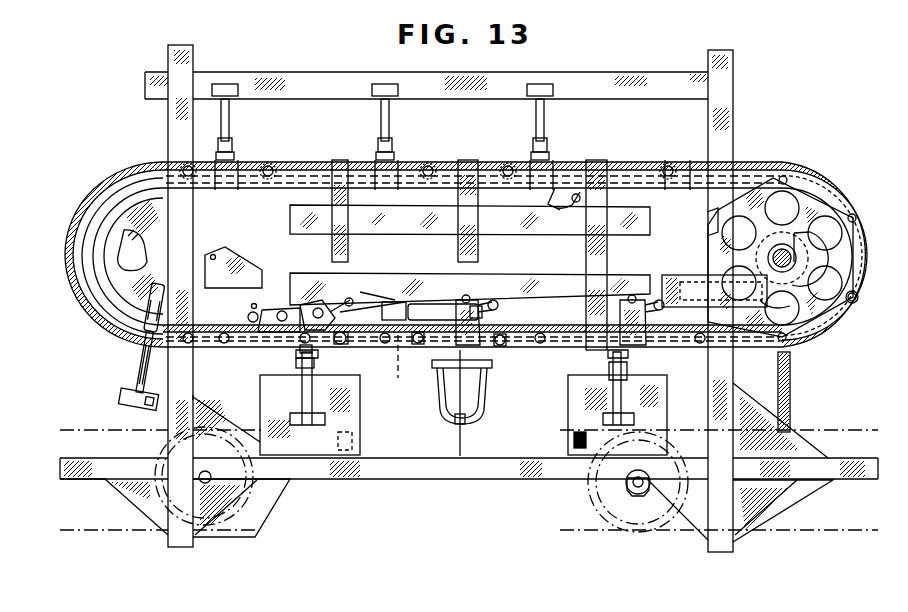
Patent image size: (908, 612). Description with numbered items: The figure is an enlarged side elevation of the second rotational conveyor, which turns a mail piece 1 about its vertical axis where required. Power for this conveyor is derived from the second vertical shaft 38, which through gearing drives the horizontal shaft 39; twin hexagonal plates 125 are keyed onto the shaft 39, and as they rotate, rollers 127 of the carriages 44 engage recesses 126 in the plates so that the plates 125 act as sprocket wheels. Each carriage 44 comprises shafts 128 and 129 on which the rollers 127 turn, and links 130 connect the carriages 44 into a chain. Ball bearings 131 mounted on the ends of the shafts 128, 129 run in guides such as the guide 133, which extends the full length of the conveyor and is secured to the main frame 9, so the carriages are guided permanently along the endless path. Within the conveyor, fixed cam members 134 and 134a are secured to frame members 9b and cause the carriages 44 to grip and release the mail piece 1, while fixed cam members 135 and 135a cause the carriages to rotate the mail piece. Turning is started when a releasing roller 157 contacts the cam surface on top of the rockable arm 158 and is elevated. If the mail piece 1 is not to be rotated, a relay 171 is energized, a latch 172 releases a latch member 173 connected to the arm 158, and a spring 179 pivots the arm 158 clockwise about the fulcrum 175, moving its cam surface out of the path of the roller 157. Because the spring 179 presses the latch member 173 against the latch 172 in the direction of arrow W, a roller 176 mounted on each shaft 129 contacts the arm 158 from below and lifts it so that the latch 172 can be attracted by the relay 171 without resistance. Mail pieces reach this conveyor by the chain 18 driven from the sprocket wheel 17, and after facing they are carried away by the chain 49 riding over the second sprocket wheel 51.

The mail piece 1 is at (362, 418).
The main frame 9 is at (734, 121).
The frame members 9b is at (483, 250).
The sprocket wheel 17 is at (152, 490).
The chain 18 is at (69, 522).
The second vertical shaft 38 is at (791, 396).
The horizontal shaft 39 is at (772, 255).
The carriages 44 is at (490, 364).
The chain 49 is at (822, 530).
The second sprocket wheel 51 is at (616, 505).
The twin hexagonal plates 125 is at (810, 190).
The recesses 126 is at (717, 222).
The rollers 127 is at (856, 304).
The shaft 128 is at (252, 356).
The shaft 129 is at (352, 346).
The links 130 is at (404, 369).
The ball bearings 131 is at (420, 348).
The guide 133 is at (90, 200).
The fixed cam member 134 is at (128, 258).
The fixed cam member 134a is at (690, 278).
The fixed cam member 135 is at (552, 282).
The fixed cam member 135a is at (568, 226).
The releasing roller 157 is at (305, 305).
The rockable arm 158 is at (336, 300).
The relay 171 is at (460, 300).
The latch 172 is at (442, 300).
The latch member 173 is at (394, 298).
The fulcrum 175 is at (280, 304).
The roller 176 is at (310, 360).
The spring 179 is at (252, 300).
The direction of arrow w W is at (403, 292).